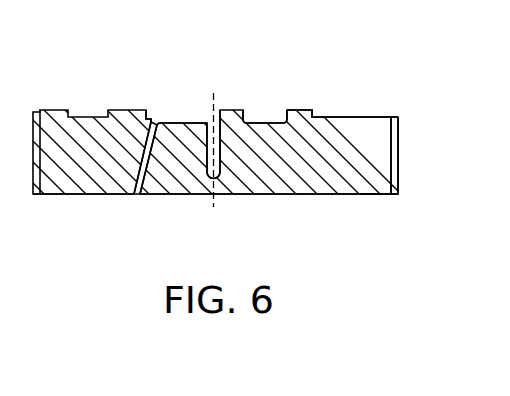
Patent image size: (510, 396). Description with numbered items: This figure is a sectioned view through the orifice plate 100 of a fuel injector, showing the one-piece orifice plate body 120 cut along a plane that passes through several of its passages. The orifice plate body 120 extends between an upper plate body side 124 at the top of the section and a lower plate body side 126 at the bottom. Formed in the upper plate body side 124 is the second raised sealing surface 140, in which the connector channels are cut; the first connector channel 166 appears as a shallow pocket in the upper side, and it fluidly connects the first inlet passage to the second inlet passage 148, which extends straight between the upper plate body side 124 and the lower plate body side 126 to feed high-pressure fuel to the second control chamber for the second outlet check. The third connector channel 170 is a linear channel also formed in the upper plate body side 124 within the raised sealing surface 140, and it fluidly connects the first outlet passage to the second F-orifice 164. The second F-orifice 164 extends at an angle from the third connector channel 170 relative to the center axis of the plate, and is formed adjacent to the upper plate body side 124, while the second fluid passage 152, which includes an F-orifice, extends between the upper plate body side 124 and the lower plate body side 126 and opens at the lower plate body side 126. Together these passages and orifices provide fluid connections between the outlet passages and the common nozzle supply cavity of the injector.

The orifice plate 100 is at (408, 119).
The orifice plate body 120 is at (397, 196).
The upper plate body side 124 is at (321, 108).
The lower plate body side 126 is at (289, 202).
The second raised sealing surface 140 is at (236, 110).
The second inlet passage 148 is at (208, 181).
The second fluid passage 152 is at (137, 182).
The second F-orifice 164 is at (138, 122).
The first connector channel 166 is at (281, 118).
The third connector channel 170 is at (169, 110).